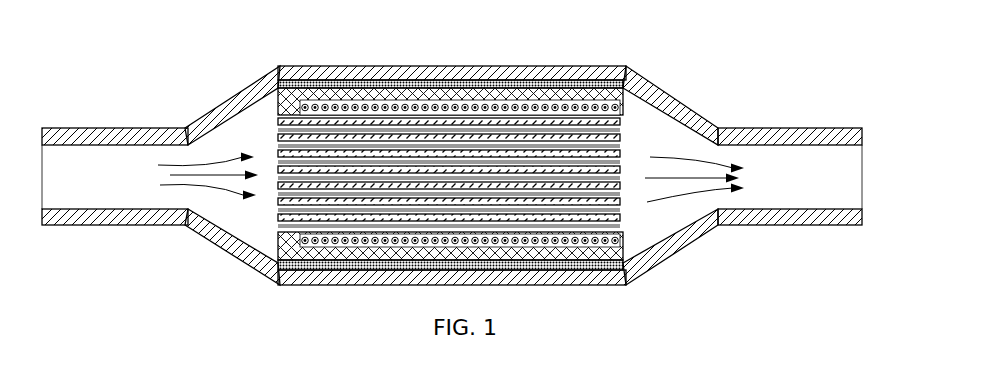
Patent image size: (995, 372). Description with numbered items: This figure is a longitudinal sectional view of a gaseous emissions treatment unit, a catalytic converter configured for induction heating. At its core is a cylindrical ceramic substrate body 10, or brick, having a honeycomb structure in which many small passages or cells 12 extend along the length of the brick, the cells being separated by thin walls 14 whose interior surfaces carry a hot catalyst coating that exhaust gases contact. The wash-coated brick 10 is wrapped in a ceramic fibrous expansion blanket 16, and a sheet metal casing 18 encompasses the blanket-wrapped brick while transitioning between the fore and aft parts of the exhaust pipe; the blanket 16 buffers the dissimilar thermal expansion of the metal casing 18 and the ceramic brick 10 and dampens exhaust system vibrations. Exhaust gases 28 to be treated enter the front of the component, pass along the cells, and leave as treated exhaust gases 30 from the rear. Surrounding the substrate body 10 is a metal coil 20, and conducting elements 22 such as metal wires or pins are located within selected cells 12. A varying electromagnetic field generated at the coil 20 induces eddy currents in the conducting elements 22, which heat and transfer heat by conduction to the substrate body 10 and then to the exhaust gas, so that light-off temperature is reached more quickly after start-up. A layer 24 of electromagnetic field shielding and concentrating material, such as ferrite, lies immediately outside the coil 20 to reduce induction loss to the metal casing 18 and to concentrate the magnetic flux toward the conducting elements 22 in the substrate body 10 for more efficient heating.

The substrate body 10 is at (452, 163).
The cells 12 is at (473, 174).
The walls 14 is at (318, 150).
The expansion blanket 16 is at (468, 78).
The casing 18 is at (415, 80).
The coil 20 is at (452, 151).
The conducting elements 22 is at (363, 204).
The electromagnetic field shielding/concentrating layer 24 is at (375, 82).
The exhaust gases 28 is at (203, 173).
The treated exhaust gases 30 is at (705, 177).